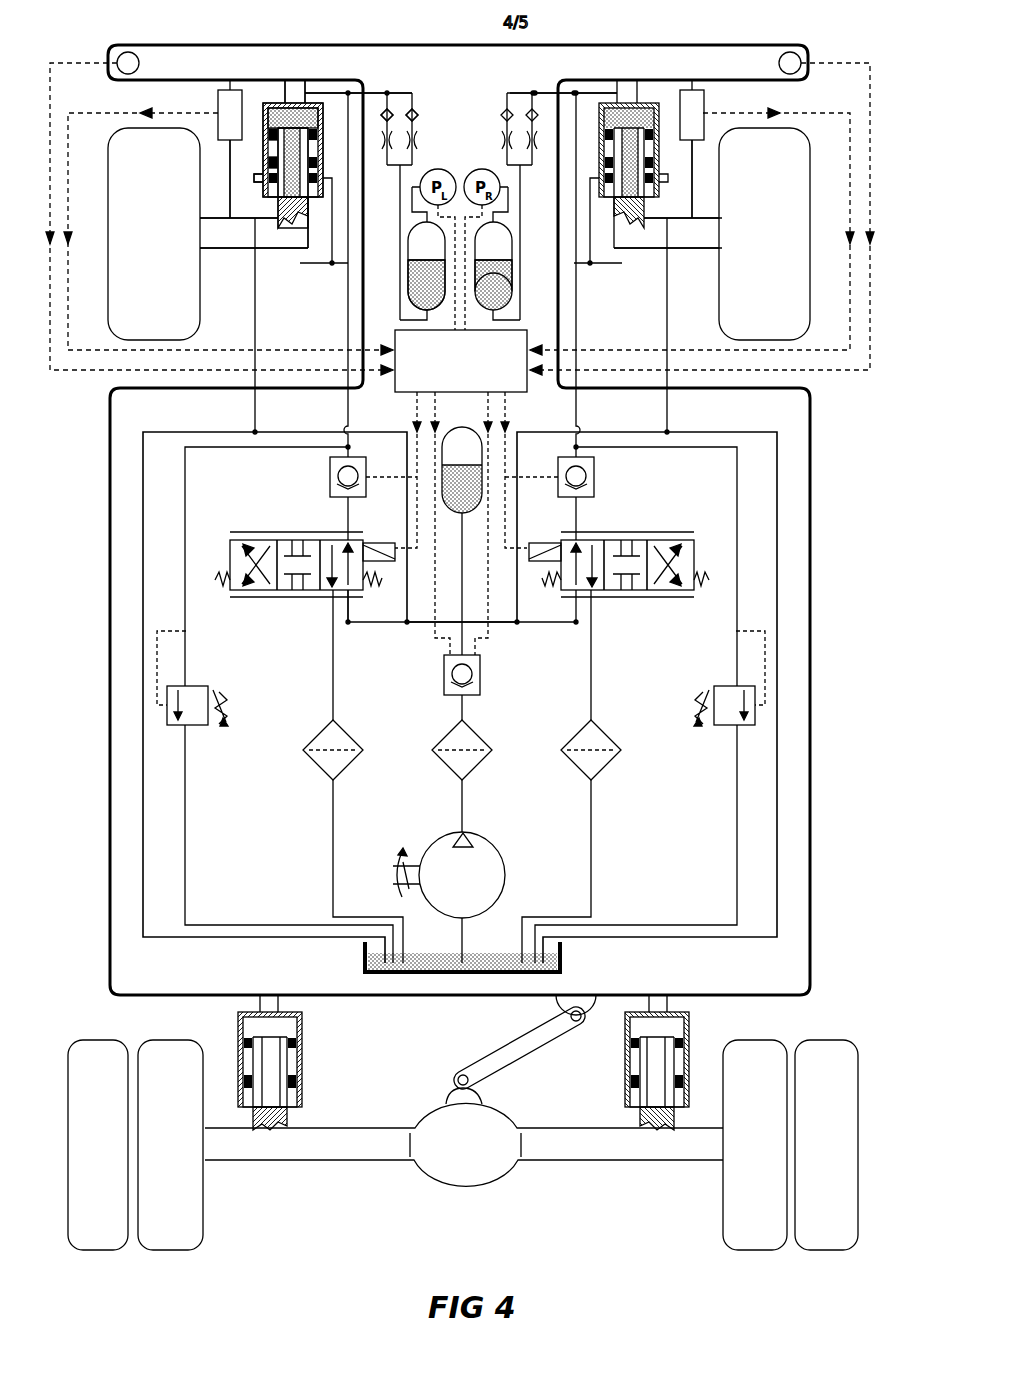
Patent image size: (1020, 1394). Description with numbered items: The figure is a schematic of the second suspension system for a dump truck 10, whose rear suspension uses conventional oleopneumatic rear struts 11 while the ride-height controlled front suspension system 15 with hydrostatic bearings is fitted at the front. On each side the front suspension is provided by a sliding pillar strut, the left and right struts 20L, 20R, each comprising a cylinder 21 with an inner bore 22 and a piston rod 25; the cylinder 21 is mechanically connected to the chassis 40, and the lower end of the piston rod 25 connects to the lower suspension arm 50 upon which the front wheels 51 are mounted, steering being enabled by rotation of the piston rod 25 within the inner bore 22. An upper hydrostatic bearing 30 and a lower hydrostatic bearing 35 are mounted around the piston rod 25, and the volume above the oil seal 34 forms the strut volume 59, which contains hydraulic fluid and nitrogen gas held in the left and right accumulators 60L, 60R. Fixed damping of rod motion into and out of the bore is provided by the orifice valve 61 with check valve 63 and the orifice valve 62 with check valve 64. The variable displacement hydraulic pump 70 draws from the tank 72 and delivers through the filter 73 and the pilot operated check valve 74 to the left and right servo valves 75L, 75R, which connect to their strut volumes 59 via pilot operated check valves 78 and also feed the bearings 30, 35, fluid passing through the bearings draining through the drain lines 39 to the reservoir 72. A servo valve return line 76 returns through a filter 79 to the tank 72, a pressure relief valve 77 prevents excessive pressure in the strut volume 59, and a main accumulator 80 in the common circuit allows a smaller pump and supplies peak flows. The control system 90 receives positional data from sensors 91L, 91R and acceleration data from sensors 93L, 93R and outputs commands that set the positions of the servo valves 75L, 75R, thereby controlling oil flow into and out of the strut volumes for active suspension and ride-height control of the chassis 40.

The dump truck 10 is at (828, 670).
The rear struts 11 is at (302, 1058).
The front suspension system 15 is at (80, 385).
The left front suspension strut 20L is at (256, 88).
The right front suspension strut 20R is at (650, 112).
The cylinder 21 is at (330, 114).
The inner bore 22 is at (308, 78).
The piston rod 25 is at (292, 222).
The upper hydrostatic bearing 30 is at (268, 138).
The oil seal 34 is at (268, 162).
The lower hydrostatic bearing 35 is at (260, 178).
The drain lines 39 is at (143, 832).
The chassis 40 is at (185, 974).
The lower suspension arm 50 is at (233, 235).
The front wheels 51 is at (165, 322).
The strut volume 59 is at (280, 110).
The left accumulator 60L is at (432, 287).
The right accumulator 60R is at (495, 287).
The orifice valve 61 is at (378, 164).
The orifice valve 62 is at (425, 145).
The check valve 63 is at (393, 100).
The check valve 64 is at (422, 100).
The variable displacement hydraulic pump 70 is at (465, 880).
The tank (reservoir) 72 is at (562, 953).
The filter 73 is at (477, 732).
The pilot operated check valve 74 is at (483, 665).
The left servo valve 75L is at (296, 606).
The right servo valve 75R is at (628, 608).
The servo valve return line 76 is at (352, 688).
The pressure relief valve 77 is at (202, 727).
The pilot operated check valves 78 is at (330, 483).
The filter 79 is at (317, 768).
The main accumulator 80 is at (458, 482).
The control system 90 is at (478, 393).
The left position sensor 91L is at (228, 93).
The right position sensor 91R is at (694, 112).
The left acceleration sensor 93L is at (112, 56).
The right acceleration sensor 93R is at (797, 50).